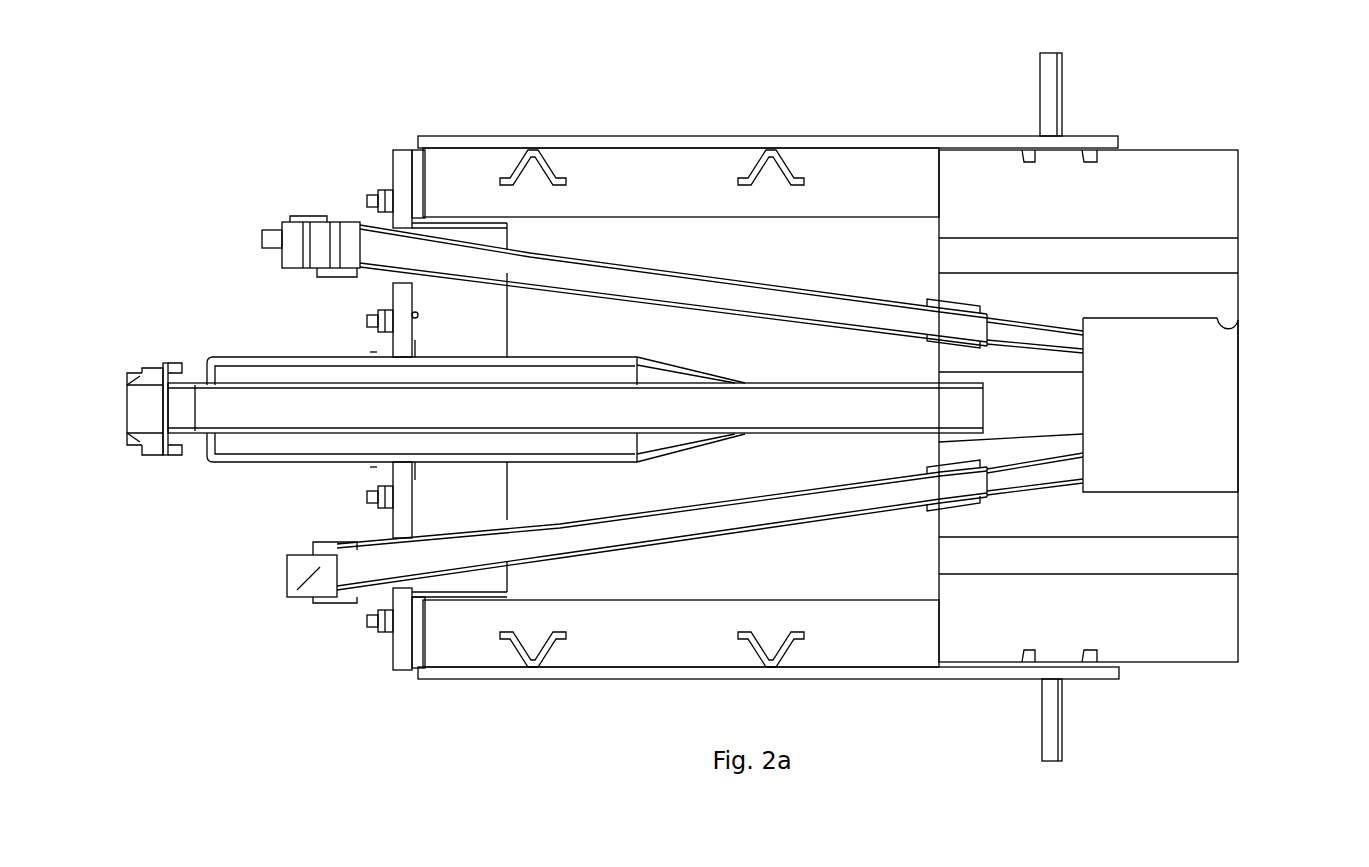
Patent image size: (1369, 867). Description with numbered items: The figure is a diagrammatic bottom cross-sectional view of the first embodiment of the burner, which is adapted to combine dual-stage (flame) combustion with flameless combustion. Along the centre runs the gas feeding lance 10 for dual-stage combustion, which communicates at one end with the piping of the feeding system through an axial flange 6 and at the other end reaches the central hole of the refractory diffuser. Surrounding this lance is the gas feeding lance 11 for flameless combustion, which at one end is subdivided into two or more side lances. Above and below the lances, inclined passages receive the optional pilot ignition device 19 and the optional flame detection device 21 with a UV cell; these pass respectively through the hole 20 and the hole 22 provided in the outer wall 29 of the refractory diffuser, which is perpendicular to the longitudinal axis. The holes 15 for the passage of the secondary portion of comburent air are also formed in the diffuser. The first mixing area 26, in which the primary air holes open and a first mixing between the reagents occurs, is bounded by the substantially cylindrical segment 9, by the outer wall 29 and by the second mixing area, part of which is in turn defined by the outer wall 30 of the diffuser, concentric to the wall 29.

The axial flange 6 is at (137, 437).
The substantially cylindrical segment 9 is at (1217, 318).
The gas feeding lance 10 is at (257, 400).
The gas feeding lance 11 is at (453, 447).
The holes 15 is at (1222, 258).
The pilot ignition device 19 is at (327, 230).
The hole 20 is at (1062, 338).
The flame detection device 21 is at (320, 572).
The hole 22 is at (1040, 477).
The first mixing area 26 is at (1196, 414).
The outer wall 29 is at (1083, 442).
The outer wall 30 is at (1240, 180).